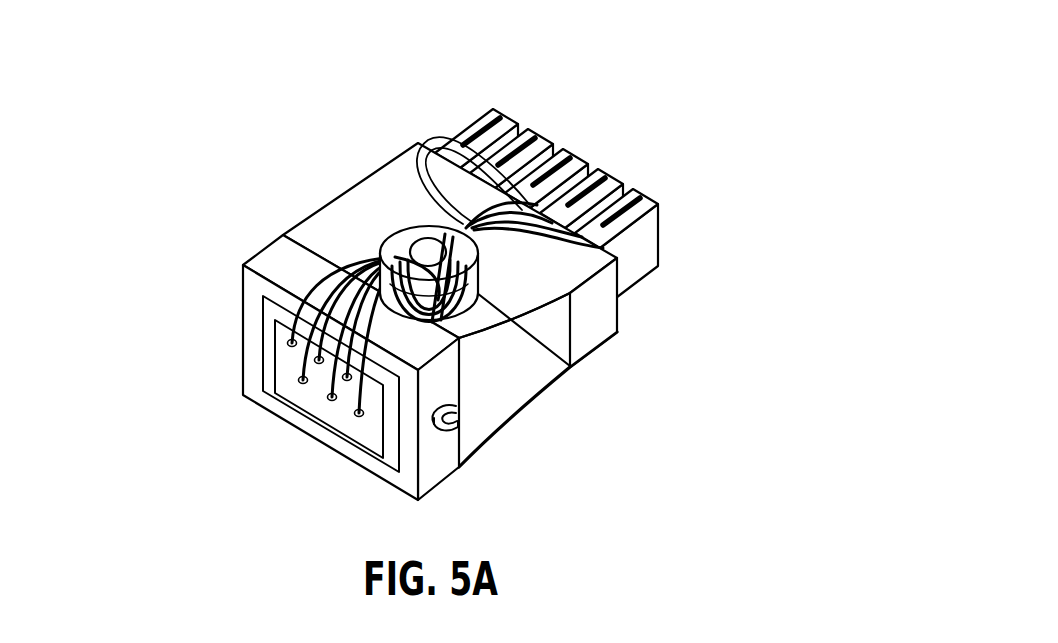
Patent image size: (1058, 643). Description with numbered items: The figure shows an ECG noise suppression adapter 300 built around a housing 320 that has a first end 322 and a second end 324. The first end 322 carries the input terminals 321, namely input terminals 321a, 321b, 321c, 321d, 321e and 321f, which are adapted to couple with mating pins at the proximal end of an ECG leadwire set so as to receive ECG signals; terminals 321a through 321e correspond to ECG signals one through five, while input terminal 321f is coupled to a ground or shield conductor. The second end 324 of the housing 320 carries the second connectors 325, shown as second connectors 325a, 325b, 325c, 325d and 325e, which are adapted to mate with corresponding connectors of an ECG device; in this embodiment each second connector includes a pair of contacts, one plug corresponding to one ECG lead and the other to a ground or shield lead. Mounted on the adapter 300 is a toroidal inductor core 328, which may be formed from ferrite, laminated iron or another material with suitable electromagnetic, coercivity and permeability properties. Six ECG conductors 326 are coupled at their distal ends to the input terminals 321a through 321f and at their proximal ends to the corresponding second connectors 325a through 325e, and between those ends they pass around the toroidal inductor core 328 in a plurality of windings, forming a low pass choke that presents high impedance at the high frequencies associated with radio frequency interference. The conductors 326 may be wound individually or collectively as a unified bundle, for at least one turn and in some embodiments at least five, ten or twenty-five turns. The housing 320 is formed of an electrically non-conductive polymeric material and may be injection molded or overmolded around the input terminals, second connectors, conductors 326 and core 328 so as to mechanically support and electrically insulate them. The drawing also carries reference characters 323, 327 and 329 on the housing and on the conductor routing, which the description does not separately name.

The ECG noise suppression adapter 300 is at (303, 118).
The housing 320 is at (273, 253).
The input terminals 321 is at (241, 391).
The input terminal 321a is at (287, 343).
The input terminal 321b is at (290, 377).
The input terminal 321c is at (318, 366).
The input terminal 321d is at (330, 402).
The input terminal 321e is at (347, 383).
The input terminal 321f is at (362, 418).
The first end 322 is at (263, 388).
The clip 323 is at (444, 432).
The second end 324 is at (491, 100).
The second connectors 325 is at (676, 72).
The second connector 325a is at (503, 110).
The second connector 325b is at (538, 130).
The second connector 325c is at (572, 150).
The second connector 325d is at (606, 170).
The second connector 325e is at (640, 190).
The ECG conductors 326 is at (347, 258).
The wire loop 327 is at (424, 165).
The toroidal inductor core 328 is at (420, 228).
The curved surface 329 is at (517, 320).